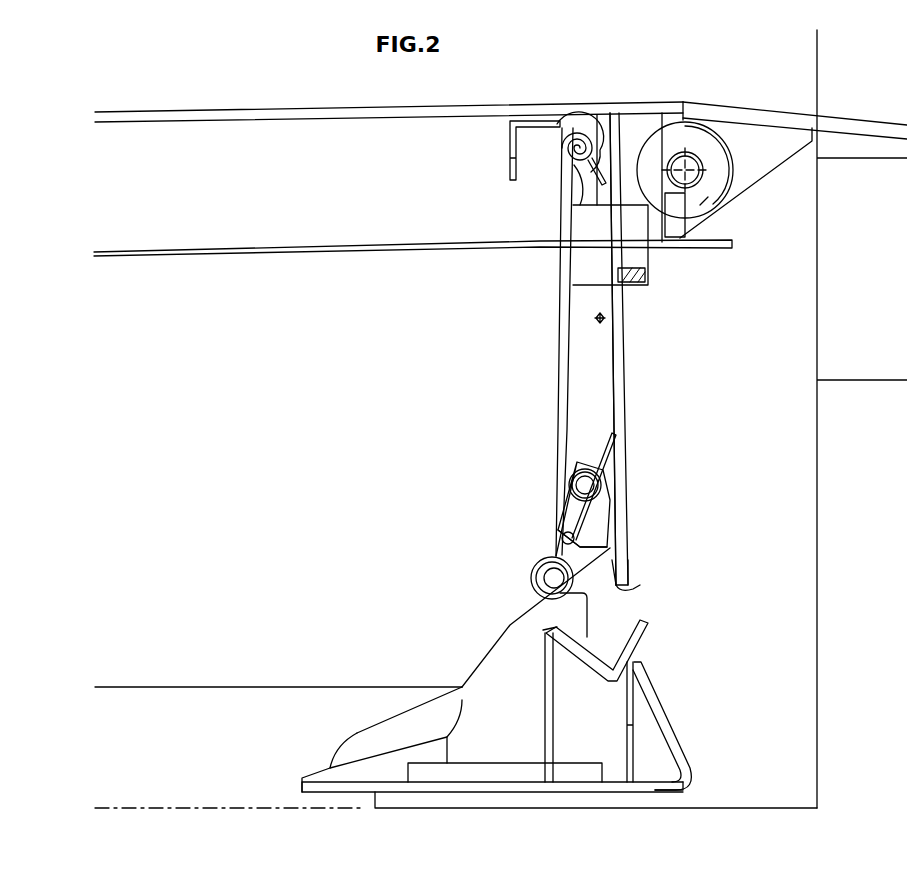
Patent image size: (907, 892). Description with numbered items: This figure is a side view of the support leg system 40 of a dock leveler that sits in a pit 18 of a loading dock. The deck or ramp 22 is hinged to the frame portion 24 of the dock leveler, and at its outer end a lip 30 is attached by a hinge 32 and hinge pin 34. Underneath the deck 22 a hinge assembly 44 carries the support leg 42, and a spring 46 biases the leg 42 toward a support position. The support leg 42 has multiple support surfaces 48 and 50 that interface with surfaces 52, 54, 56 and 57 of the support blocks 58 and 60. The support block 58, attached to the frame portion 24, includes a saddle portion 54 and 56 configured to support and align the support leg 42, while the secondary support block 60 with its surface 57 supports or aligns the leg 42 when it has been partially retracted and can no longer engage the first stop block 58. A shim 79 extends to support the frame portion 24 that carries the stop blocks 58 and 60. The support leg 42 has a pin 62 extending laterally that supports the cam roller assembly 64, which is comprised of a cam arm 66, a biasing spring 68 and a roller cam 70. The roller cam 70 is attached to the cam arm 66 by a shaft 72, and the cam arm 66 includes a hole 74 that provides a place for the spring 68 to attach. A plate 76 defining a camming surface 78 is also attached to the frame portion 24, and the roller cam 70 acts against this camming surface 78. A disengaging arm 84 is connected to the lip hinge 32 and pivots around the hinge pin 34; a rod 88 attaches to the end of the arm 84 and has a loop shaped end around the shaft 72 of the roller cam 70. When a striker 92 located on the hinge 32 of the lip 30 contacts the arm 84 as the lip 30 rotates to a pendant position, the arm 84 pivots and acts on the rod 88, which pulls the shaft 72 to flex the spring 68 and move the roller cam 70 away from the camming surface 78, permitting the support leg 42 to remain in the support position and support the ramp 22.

The pit 18 is at (178, 808).
The deck or ramp portion 22 is at (187, 112).
The frame portion 24 is at (187, 687).
The lip 30 is at (776, 111).
The hinge 32 is at (706, 201).
The hinge pin 34 is at (700, 216).
The support leg system 40 is at (700, 421).
The support leg 42 is at (590, 390).
The hinge assembly 44 is at (560, 165).
The spring 46 is at (580, 130).
The support surface 48 is at (634, 584).
The support surface 50 is at (612, 588).
The surface 52 is at (390, 748).
The saddle portion 54 is at (615, 650).
The saddle portion 56 is at (617, 652).
The support surface 57 is at (472, 763).
The support block 58 is at (644, 620).
The secondary support block 60 is at (450, 747).
The pin 62 is at (570, 476).
The cam roller assembly 64 is at (545, 490).
The cam arm 66 is at (562, 535).
The biasing spring 68 is at (614, 445).
The roller cam 70 is at (531, 570).
The shaft 72 is at (544, 580).
The hole 74 is at (558, 545).
The plate 76 is at (443, 708).
The camming surface 78 is at (500, 637).
The shim 79 is at (655, 792).
The arm 84 is at (620, 205).
The rod 88 is at (568, 328).
The striker 92 is at (680, 240).